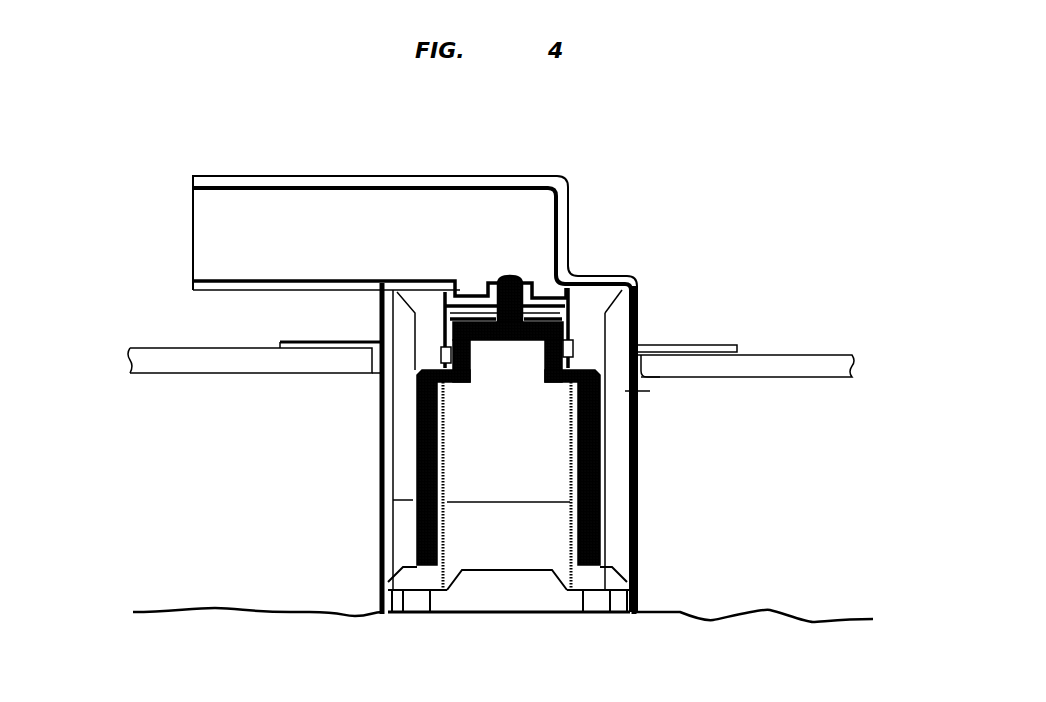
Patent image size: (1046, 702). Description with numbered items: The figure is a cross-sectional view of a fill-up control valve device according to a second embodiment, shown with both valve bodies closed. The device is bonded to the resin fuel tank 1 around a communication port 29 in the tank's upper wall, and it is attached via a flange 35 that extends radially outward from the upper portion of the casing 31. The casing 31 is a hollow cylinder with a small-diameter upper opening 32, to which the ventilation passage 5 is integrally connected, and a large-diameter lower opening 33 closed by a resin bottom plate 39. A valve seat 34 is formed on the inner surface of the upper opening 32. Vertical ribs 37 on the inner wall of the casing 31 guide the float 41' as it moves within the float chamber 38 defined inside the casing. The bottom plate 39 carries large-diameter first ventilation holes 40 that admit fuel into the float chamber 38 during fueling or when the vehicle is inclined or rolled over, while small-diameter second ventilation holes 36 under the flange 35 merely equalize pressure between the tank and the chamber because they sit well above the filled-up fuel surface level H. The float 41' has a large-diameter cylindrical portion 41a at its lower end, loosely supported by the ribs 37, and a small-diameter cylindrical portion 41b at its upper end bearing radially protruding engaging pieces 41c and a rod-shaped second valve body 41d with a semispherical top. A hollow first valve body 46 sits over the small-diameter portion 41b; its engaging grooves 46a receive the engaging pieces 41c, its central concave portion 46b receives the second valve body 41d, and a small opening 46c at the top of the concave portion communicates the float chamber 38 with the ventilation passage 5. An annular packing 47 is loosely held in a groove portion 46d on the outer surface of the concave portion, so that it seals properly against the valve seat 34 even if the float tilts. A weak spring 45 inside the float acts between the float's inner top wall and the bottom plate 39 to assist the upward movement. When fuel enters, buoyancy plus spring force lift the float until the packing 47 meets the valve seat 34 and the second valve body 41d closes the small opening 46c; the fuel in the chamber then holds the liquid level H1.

The fuel tank 1 is at (820, 378).
The ventilation passage 5 is at (276, 177).
The communication port 29 is at (642, 378).
The casing 31 is at (645, 296).
The small-diameter upper opening 32 is at (478, 290).
The large-diameter lower opening 33 is at (383, 618).
The valve seat 34 is at (568, 268).
The flange 35 is at (280, 343).
The small-diameter second ventilation holes 36 is at (380, 376).
The vertical ribs 37 is at (400, 450).
The float chamber 38 is at (463, 483).
The bottom plate 39 is at (512, 600).
The large-diameter first ventilation holes 40 is at (420, 612).
The float 41' is at (365, 480).
The large-diameter cylindrical portion 41a is at (603, 530).
The small-diameter cylindrical portion 41b is at (673, 350).
The engaging pieces 41c is at (620, 322).
The small-diameter second valve body 41d is at (507, 275).
The spring 45 is at (620, 583).
The large-diameter first valve body 46 is at (628, 275).
The engaging grooves 46a is at (443, 353).
The concave portion 46b is at (502, 295).
The small opening 46c is at (512, 272).
The groove portion 46d is at (463, 285).
The annular packing 47 is at (418, 293).
The filled-up fuel surface level H is at (823, 618).
The liquid level H1 is at (495, 502).